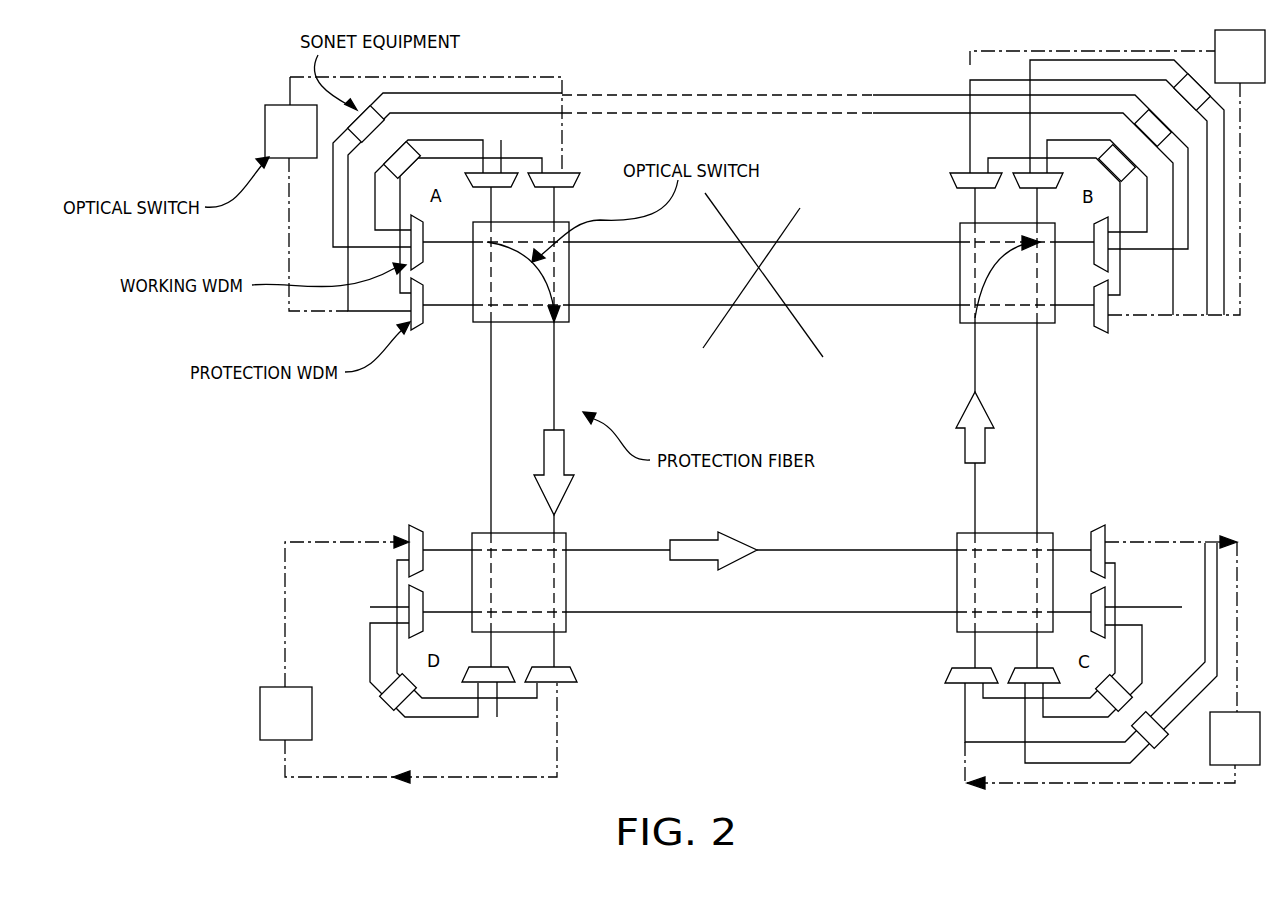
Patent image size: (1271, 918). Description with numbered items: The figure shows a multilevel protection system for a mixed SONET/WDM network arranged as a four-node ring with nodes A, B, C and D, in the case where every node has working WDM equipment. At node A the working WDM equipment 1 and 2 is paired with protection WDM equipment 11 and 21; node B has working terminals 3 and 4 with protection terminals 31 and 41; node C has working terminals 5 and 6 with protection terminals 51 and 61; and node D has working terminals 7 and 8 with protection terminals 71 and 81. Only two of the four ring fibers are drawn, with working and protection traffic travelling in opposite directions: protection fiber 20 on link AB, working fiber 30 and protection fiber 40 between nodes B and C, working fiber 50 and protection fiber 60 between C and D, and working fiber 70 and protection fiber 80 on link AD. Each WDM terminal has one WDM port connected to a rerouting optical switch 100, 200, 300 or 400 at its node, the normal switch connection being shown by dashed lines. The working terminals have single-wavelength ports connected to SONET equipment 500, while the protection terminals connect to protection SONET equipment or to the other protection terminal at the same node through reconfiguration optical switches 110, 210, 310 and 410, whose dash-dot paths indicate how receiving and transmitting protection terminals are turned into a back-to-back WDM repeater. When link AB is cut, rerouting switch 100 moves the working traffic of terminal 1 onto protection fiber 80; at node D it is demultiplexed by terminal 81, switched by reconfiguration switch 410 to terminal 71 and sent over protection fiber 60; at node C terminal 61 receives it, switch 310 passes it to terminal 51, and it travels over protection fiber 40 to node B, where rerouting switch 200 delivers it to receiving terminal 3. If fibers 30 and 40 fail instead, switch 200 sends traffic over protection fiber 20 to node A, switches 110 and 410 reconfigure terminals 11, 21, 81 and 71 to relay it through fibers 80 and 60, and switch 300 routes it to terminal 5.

The working WDM equipment 1 is at (442, 242).
The protection WDM equipment 11 is at (442, 306).
The working WDM equipment 2 is at (494, 181).
The protection WDM equipment 21 is at (562, 197).
The working WDM equipment 3 is at (1081, 244).
The protection WDM equipment 31 is at (1081, 308).
The working WDM equipment 4 is at (1035, 198).
The protection WDM equipment 41 is at (970, 198).
The working WDM equipment 5 is at (1031, 657).
The protection WDM equipment 51 is at (965, 657).
The working WDM equipment 6 is at (1117, 612).
The protection WDM equipment 61 is at (1079, 551).
The working WDM equipment 7 is at (421, 611).
The protection WDM equipment 71 is at (440, 550).
The working WDM equipment 8 is at (485, 674).
The protection WDM equipment 81 is at (558, 657).
The protection fiber 20 is at (777, 275).
The working fiber 30 is at (1052, 428).
The protection fiber 40 is at (969, 428).
The working fiber 50 is at (761, 627).
The protection fiber 60 is at (761, 548).
The working fiber 70 is at (475, 427).
The protection fiber 80 is at (558, 427).
The rerouting optical switch 100 is at (521, 272).
The rerouting optical switch 200 is at (1007, 273).
The rerouting optical switch 300 is at (1005, 582).
The rerouting optical switch 400 is at (519, 582).
The reconfiguration optical switch 110 is at (413, 194).
The reconfiguration optical switch 210 is at (1117, 172).
The reconfiguration optical switch 310 is at (1112, 662).
The reconfiguration optical switch 410 is at (408, 659).
The SONET equipment 500 is at (779, 411).